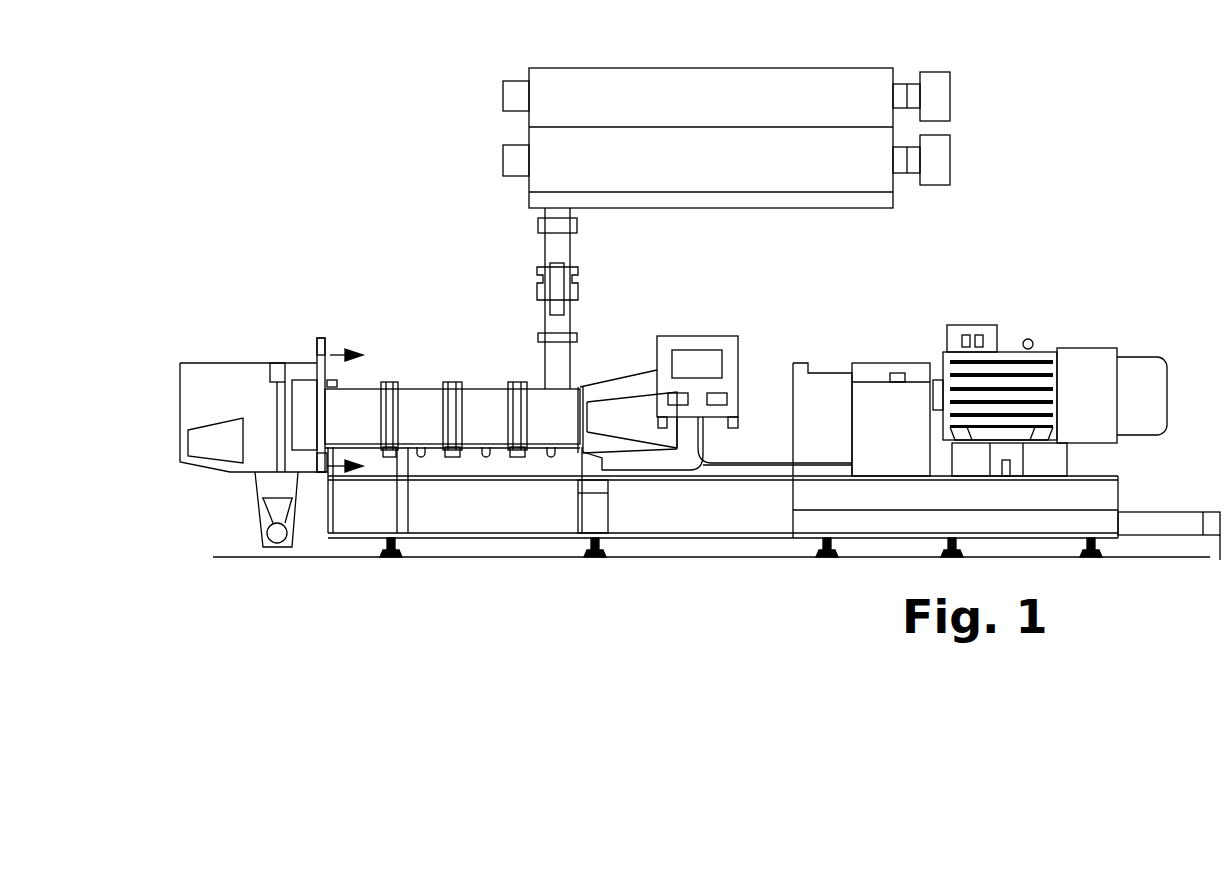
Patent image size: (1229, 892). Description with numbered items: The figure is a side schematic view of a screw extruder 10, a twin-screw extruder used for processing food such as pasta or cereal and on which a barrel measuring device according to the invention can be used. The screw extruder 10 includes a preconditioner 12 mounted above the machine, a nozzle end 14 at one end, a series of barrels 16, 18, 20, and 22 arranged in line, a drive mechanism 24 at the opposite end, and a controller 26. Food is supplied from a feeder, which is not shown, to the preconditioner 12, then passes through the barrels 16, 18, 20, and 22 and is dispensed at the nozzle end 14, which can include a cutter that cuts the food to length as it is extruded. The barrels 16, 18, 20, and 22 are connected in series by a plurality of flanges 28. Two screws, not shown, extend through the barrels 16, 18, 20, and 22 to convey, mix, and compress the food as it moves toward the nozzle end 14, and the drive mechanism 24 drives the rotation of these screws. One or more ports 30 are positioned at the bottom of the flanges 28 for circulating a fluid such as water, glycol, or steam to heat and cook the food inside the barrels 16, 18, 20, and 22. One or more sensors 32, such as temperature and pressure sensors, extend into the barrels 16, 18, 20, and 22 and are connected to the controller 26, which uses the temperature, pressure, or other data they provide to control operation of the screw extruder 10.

The screw extruder 10 is at (243, 126).
The preconditioner 12 is at (562, 68).
The nozzle end 14 is at (190, 363).
The barrel 16 is at (379, 382).
The barrel 18 is at (420, 389).
The barrel 20 is at (483, 389).
The barrel 22 is at (536, 389).
The drive mechanism 24 is at (1092, 358).
The controller 26 is at (738, 336).
The flange 28 is at (442, 448).
The port 30 is at (450, 460).
The sensor 32 is at (484, 457).